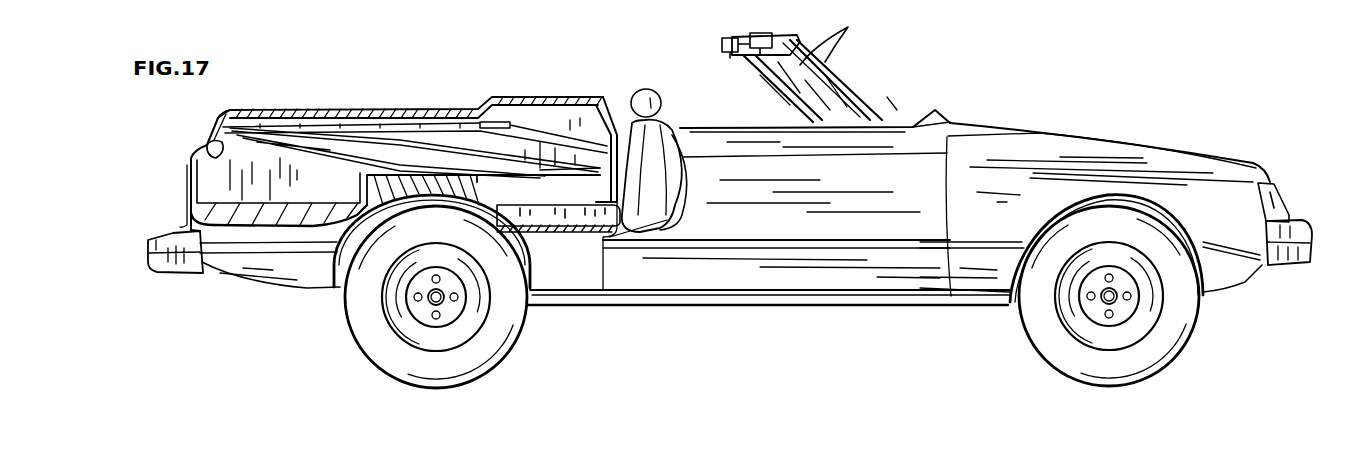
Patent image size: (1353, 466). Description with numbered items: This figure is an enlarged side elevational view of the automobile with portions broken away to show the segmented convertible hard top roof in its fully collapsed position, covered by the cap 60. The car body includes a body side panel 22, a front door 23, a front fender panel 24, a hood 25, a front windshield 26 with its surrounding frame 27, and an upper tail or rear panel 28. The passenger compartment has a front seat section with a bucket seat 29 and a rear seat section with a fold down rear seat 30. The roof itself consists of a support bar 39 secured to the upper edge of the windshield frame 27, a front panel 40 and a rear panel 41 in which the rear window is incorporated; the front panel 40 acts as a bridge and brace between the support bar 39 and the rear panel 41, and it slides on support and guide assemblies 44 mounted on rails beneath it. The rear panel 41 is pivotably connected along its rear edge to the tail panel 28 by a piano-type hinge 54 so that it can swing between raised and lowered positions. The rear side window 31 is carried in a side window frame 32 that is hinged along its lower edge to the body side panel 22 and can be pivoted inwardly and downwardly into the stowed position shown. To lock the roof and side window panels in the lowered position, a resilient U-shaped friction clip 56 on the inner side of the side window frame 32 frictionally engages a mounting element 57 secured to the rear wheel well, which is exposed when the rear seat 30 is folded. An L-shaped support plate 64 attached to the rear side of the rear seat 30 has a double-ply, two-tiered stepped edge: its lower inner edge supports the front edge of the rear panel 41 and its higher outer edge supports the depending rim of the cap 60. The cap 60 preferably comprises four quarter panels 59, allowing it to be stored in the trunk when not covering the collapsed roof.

The body side panel 22 is at (330, 238).
The front door 23 is at (790, 236).
The front fender panel 24 is at (1030, 237).
The hood 25 is at (975, 128).
The front windshield 26 is at (866, 82).
The windshield frame 27 is at (832, 56).
The upper tail panel 28 is at (190, 155).
The bucket seat 29 is at (662, 112).
The fold down rear seat 30 is at (583, 232).
The rear side window 31 is at (375, 148).
The side window frame 32 is at (613, 108).
The support bar 39 is at (772, 36).
The front panel 40 is at (505, 122).
The rear panel 41 is at (392, 124).
The support and guide assembly 44 is at (738, 27).
The piano-type hinge 54 is at (210, 146).
The friction clip 56 is at (483, 180).
The mounting element 57 is at (462, 198).
The quarter panel 59 is at (337, 110).
The cap 60 is at (292, 93).
The support plate 64 is at (670, 212).